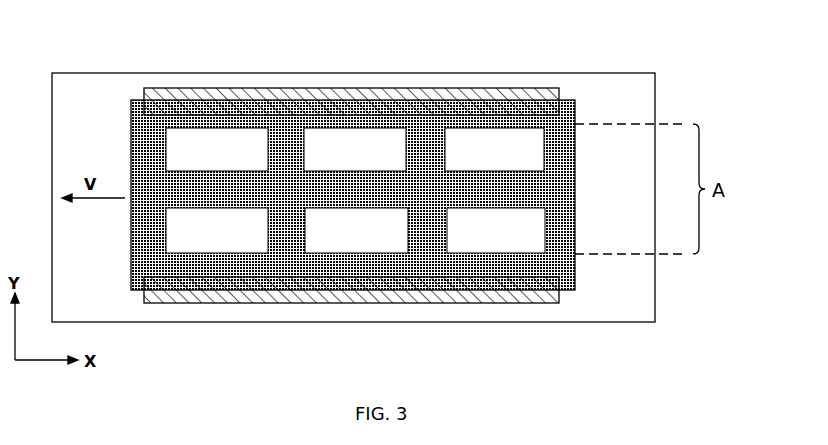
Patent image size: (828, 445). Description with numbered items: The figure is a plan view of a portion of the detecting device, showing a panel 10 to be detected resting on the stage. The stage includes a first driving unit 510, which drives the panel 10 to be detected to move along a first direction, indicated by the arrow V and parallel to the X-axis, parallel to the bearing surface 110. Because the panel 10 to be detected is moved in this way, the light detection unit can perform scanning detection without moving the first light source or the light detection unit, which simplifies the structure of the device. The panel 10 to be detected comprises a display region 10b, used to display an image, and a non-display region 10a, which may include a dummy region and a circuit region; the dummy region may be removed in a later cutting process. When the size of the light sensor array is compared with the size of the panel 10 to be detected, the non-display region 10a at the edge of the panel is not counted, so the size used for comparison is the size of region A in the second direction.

The bearing surface 110 is at (353, 178).
The panel to be detected 10 is at (369, 145).
The non-display region 10a is at (353, 167).
The display region 10b is at (563, 59).
The first driving unit 510 is at (351, 200).